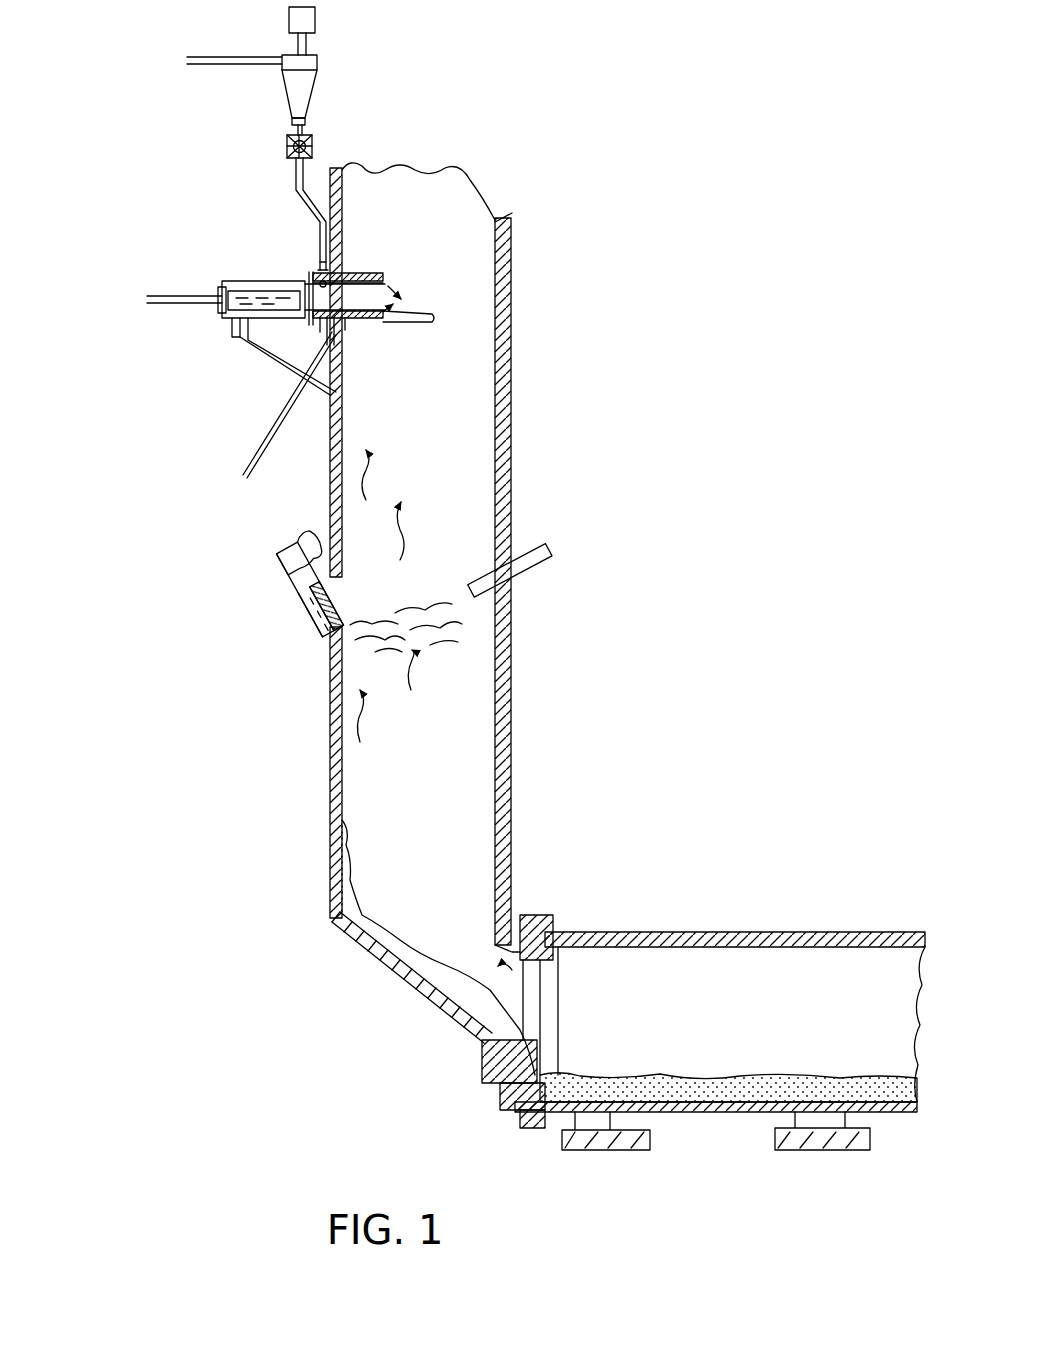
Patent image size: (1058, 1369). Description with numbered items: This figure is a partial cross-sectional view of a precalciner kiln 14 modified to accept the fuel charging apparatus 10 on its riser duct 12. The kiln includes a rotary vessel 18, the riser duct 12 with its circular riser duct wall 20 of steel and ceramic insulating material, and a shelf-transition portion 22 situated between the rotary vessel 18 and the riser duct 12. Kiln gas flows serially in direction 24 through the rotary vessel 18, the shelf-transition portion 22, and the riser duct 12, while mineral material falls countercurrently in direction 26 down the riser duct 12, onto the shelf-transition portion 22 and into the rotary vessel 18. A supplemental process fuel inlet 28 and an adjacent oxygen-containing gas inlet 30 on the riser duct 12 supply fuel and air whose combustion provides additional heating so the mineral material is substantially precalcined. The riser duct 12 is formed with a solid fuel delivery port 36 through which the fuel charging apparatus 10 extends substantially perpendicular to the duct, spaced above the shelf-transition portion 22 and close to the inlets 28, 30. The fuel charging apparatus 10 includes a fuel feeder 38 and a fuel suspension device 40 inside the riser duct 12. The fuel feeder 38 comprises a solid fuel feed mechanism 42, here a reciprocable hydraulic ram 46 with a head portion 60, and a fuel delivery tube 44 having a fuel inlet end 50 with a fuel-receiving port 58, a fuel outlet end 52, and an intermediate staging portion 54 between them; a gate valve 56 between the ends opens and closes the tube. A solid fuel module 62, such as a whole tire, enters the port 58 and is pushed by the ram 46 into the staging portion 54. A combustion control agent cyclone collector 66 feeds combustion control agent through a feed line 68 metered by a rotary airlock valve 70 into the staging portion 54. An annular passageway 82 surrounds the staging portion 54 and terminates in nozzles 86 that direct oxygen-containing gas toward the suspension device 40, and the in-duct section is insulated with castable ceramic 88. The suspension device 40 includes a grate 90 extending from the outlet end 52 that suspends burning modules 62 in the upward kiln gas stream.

The fuel charging apparatus 10 is at (276, 242).
The riser duct 12 is at (512, 385).
The precalciner kiln 14 is at (582, 656).
The rotary vessel 18 is at (790, 932).
The riser duct wall 20 is at (511, 698).
The shelf-transition portion 22 is at (393, 973).
The direction of kiln gas flow 24 is at (405, 535).
The direction of mineral material flow 26 is at (447, 244).
The supplemental process fuel inlet 28 is at (536, 566).
The oxygen-containing gas inlet 30 is at (283, 555).
The solid fuel delivery port 36 is at (358, 270).
The fuel feeder 38 is at (204, 344).
The fuel suspension device 40 is at (455, 297).
The solid fuel feed mechanism 42 is at (160, 306).
The fuel delivery tube 44 is at (264, 281).
The reciprocable hydraulic ram 46 is at (188, 296).
The fuel inlet end 50 is at (226, 284).
The fuel outlet end 52 is at (386, 278).
The intermediate staging portion 54 is at (352, 328).
The gate valve 56 is at (312, 325).
The fuel-receiving port 58 is at (309, 275).
The head portion 60 is at (222, 320).
The solid fuel module 62 is at (262, 308).
The combustion control agent cyclone collector 66 is at (318, 74).
The combustion control agent feed line 68 is at (296, 192).
The valve 70 is at (312, 138).
The annular passageway 82 is at (380, 319).
The nozzles 86 is at (422, 322).
The castable ceramic 88 is at (385, 272).
The grate 90 is at (416, 293).